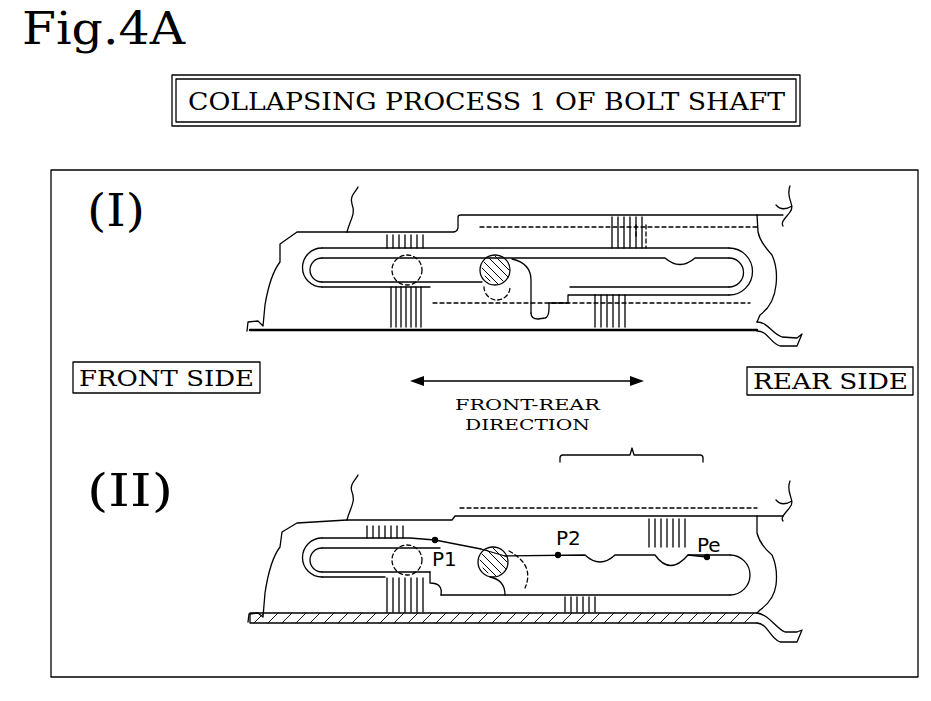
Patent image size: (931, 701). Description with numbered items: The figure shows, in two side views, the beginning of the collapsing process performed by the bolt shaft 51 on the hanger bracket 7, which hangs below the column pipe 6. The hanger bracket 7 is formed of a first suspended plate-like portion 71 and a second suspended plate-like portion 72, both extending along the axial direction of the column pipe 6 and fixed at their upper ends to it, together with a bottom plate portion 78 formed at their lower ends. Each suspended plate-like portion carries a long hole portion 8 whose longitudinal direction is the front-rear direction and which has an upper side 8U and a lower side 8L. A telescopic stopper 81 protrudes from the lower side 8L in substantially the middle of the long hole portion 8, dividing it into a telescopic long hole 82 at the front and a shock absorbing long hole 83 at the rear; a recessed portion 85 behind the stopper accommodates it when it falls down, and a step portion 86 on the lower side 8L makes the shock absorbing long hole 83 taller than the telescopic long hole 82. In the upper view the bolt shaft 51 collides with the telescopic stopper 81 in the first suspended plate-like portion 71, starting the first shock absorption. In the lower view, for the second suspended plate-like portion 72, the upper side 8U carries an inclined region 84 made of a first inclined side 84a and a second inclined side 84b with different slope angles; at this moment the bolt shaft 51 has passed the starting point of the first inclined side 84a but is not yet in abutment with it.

The column pipe 6 is at (795, 210).
The hanger bracket 7 is at (266, 260).
The first suspended plate-like portion 71 is at (763, 275).
The second suspended plate-like portion 72 is at (762, 568).
The bottom plate portion 78 is at (690, 331).
The long hole portion 8 is at (529, 423).
The upper side 8U is at (688, 259).
The lower side 8L is at (640, 286).
The telescopic stopper 81 is at (527, 270).
The telescopic long hole 82 is at (343, 270).
The shock absorbing long hole 83 is at (707, 281).
The inclined region 84 is at (631, 446).
The first inclined side 84a is at (538, 560).
The second inclined side 84b is at (687, 556).
The recessed portion 85 is at (550, 312).
The step portion 86 is at (508, 288).
The bolt shaft 51 is at (426, 248).